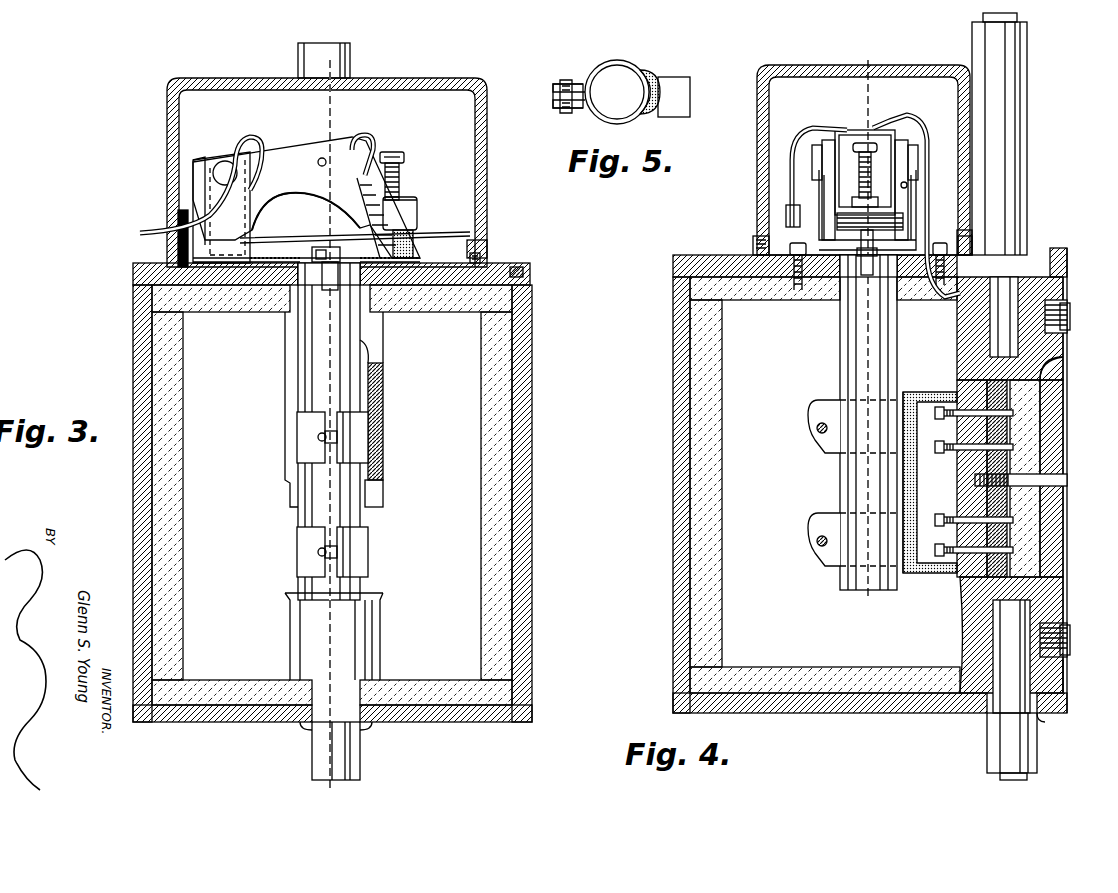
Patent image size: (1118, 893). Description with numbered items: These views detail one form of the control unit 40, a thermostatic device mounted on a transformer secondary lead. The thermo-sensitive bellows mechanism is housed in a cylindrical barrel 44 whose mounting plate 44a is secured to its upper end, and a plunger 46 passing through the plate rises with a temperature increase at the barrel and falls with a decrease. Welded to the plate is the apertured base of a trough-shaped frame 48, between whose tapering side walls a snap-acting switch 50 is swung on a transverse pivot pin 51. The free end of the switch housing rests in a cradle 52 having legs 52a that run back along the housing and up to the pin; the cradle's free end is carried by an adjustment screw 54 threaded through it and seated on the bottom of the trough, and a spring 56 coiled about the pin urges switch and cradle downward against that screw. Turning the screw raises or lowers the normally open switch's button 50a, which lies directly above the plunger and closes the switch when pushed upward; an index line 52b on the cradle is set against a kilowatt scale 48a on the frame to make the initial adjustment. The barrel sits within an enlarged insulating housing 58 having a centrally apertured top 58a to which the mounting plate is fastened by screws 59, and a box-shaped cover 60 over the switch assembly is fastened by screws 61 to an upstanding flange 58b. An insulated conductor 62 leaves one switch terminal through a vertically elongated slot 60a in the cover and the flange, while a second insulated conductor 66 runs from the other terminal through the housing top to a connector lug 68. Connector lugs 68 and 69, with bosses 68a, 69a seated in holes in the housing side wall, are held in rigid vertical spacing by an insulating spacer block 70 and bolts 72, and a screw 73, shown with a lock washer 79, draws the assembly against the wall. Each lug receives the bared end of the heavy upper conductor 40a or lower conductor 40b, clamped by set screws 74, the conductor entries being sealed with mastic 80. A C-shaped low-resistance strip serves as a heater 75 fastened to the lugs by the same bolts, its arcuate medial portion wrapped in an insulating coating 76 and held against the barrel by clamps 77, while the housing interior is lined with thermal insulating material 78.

In FIG. 3, the control unit 40 is at (128, 296).
In FIG. 4, the control unit 40 is at (670, 620).
In FIG. 3, the upper conductor 40a is at (350, 60).
In FIG. 4, the upper conductor 40a is at (1028, 216).
In FIG. 3, the lower conductor 40b is at (318, 752).
In FIG. 4, the lower conductor 40b is at (1037, 766).
In FIG. 3, the cylindrical barrel 44 is at (314, 352).
In FIG. 5, the cylindrical barrel 44 is at (604, 84).
In FIG. 4, the cylindrical barrel 44 is at (854, 343).
In FIG. 3, the mounting plate 44a is at (356, 283).
In FIG. 4, the mounting plate 44a is at (838, 298).
In FIG. 3, the plunger 46 is at (336, 262).
In FIG. 4, the plunger 46 is at (860, 262).
In FIG. 3, the trough-shaped frame 48 is at (306, 153).
In FIG. 4, the trough-shaped frame 48 is at (820, 183).
In FIG. 3, the scale 48a is at (414, 240).
In FIG. 3, the snap-acting switch 50 is at (203, 188).
In FIG. 4, the snap-acting switch 50 is at (850, 140).
In FIG. 3, the button 50a is at (312, 257).
In FIG. 3, the pivot pin 51 is at (200, 175).
In FIG. 4, the pivot pin 51 is at (810, 160).
In FIG. 3, the cradle 52 is at (418, 215).
In FIG. 4, the cradle 52 is at (906, 208).
In FIG. 3, the legs 52a is at (284, 205).
In FIG. 3, the index line 52b is at (410, 199).
In FIG. 3, the adjustment screw 54 is at (404, 157).
In FIG. 4, the adjustment screw 54 is at (859, 162).
In FIG. 3, the spring 56 is at (324, 157).
In FIG. 4, the spring 56 is at (910, 186).
In FIG. 3, the housing 58 is at (133, 506).
In FIG. 4, the housing 58 is at (680, 401).
In FIG. 3, the top 58a is at (518, 266).
In FIG. 3, the upstanding flange 58b is at (487, 242).
In FIG. 4, the upstanding flange 58b is at (975, 233).
In FIG. 4, the screws 59 is at (796, 291).
In FIG. 3, the cover 60 is at (172, 96).
In FIG. 4, the cover 60 is at (836, 65).
In FIG. 3, the slot 60a is at (178, 246).
In FIG. 3, the screws 61 is at (484, 252).
In FIG. 4, the screws 61 is at (756, 238).
In FIG. 3, the insulated conductor 62 is at (244, 150).
In FIG. 4, the insulated conductor 62 is at (798, 148).
In FIG. 3, the second insulated conductor 66 is at (368, 140).
In FIG. 4, the second insulated conductor 66 is at (916, 122).
In FIG. 3, the connector lug 68 is at (382, 385).
In FIG. 4, the connector lug 68 is at (975, 335).
In FIG. 4, the boss 68a is at (1062, 352).
In FIG. 3, the connector lug 69 is at (372, 643).
In FIG. 4, the connector lug 69 is at (965, 632).
In FIG. 4, the boss 69a is at (1066, 680).
In FIG. 3, the insulating spacer block 70 is at (383, 493).
In FIG. 4, the insulating spacer block 70 is at (1000, 470).
In FIG. 4, the bolts 72 is at (1010, 425).
In FIG. 4, the screw 73 is at (1067, 478).
In FIG. 4, the set screws 74 is at (1067, 312).
In FIG. 5, the heater 75 is at (673, 78).
In FIG. 4, the heater 75 is at (935, 394).
In FIG. 5, the coating 76 is at (644, 66).
In FIG. 4, the coating 76 is at (903, 466).
In FIG. 3, the clamps 77 is at (297, 437).
In FIG. 5, the clamps 77 is at (606, 62).
In FIG. 4, the clamps 77 is at (812, 415).
In FIG. 3, the thermal insulating material 78 is at (432, 300).
In FIG. 4, the thermal insulating material 78 is at (716, 441).
In FIG. 4, the lock washer 79 is at (1070, 330).
In FIG. 4, the mastic 80 is at (1042, 250).